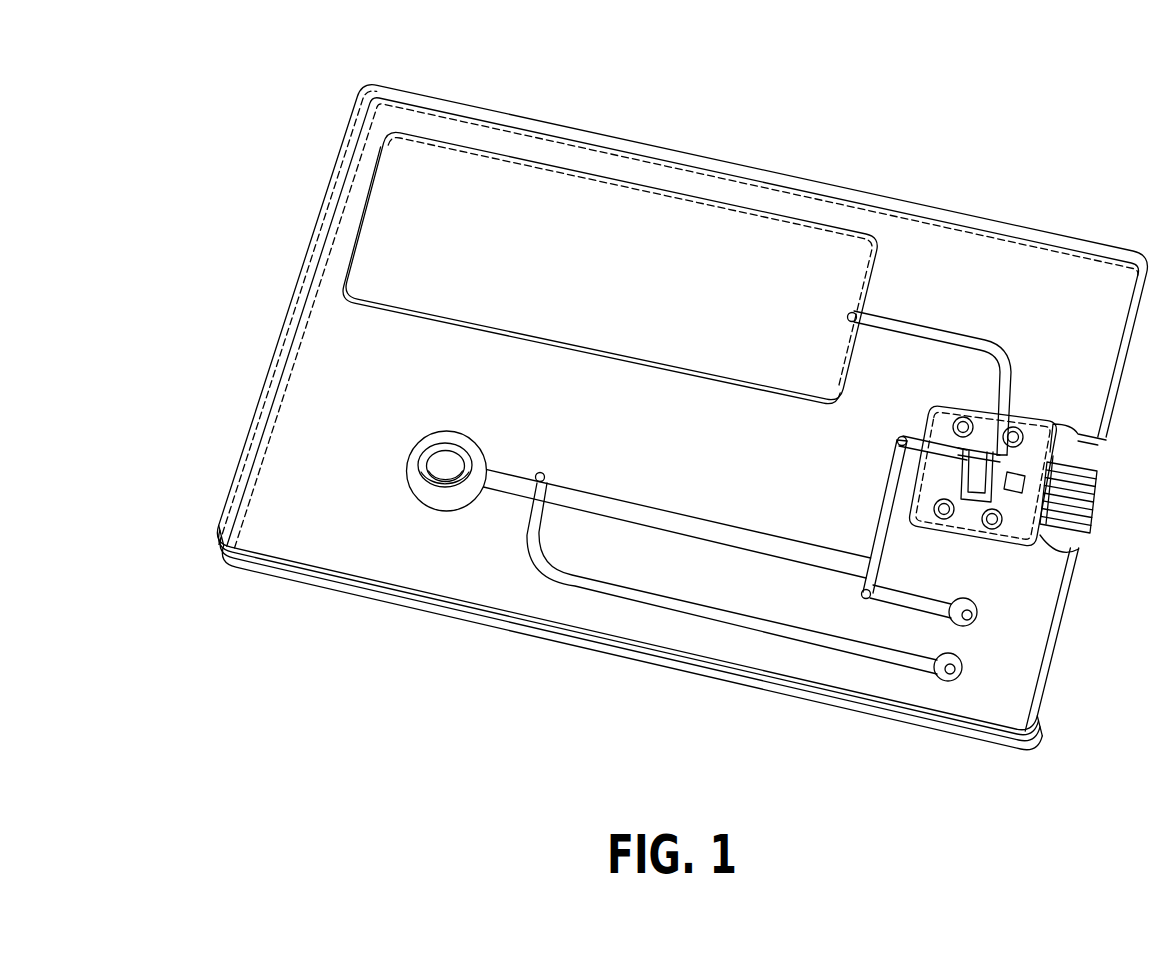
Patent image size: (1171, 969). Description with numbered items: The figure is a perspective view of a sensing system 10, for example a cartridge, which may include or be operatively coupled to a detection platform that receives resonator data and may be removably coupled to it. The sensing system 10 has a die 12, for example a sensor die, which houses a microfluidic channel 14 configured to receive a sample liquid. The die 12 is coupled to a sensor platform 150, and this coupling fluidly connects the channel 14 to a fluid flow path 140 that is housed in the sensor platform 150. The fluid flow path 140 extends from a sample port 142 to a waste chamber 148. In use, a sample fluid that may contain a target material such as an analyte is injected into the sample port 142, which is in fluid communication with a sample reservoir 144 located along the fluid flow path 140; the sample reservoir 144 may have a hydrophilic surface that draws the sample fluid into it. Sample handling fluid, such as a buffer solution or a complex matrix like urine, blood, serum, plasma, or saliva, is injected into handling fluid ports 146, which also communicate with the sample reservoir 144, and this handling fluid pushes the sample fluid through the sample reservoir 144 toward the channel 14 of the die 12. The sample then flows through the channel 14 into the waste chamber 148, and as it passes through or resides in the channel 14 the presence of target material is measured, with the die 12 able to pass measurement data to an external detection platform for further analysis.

The sensing system 10 is at (732, 86).
The die 12 is at (1044, 468).
The microfluidic channel 14 is at (993, 492).
The fluid flow path 140 is at (927, 328).
The sample port 142 is at (436, 509).
The sample reservoir 144 is at (723, 543).
The handling fluid ports 146 is at (945, 700).
The waste chamber 148 is at (433, 170).
The sensor platform 150 is at (240, 583).